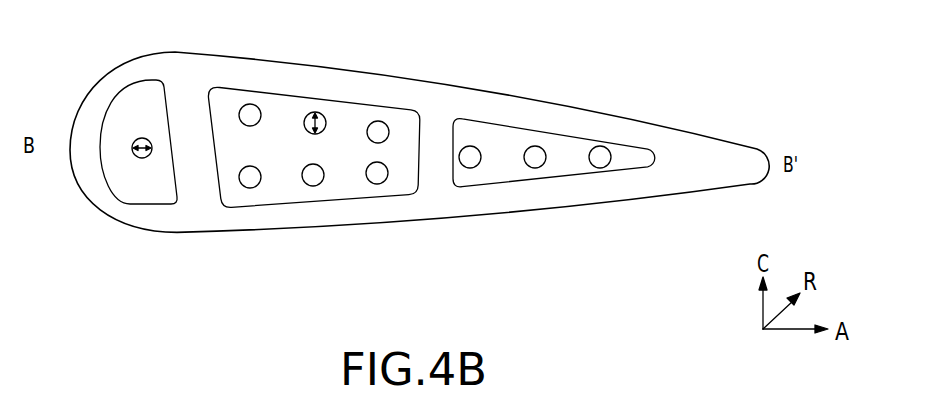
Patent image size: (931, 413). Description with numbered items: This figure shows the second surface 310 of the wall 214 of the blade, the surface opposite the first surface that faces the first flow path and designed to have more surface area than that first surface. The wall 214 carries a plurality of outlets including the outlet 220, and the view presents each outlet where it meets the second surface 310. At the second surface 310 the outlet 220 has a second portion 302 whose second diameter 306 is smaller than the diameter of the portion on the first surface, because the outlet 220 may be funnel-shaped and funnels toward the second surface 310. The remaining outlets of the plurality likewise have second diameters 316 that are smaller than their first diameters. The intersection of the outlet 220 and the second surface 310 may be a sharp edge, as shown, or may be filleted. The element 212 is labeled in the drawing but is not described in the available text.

The cooling hole 212 is at (250, 200).
The cooling holes 214 is at (345, 172).
The lateral displacement indicator 220 is at (143, 158).
The leading edge cavity 302 is at (134, 155).
The airfoil outer wall 306 is at (136, 141).
The central cavity 310 is at (403, 120).
The vertical displacement indicator 316 is at (325, 120).